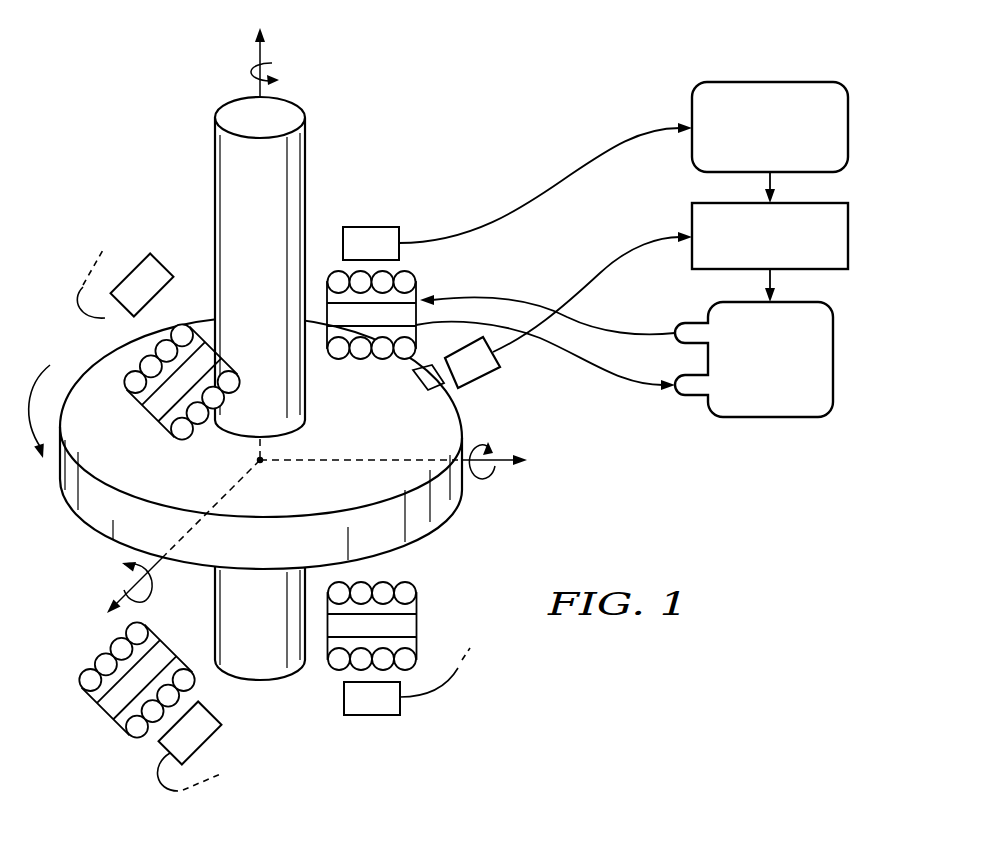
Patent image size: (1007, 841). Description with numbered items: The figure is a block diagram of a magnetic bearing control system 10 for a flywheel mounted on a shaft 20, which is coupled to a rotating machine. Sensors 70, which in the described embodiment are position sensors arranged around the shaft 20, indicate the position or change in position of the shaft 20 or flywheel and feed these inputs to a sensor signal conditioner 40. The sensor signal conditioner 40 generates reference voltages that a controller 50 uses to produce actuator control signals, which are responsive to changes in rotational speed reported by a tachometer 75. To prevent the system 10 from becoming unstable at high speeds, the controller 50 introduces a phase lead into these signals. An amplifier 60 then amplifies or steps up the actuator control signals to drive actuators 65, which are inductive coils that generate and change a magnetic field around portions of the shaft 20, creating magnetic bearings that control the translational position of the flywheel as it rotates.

The magnetic bearing control system 10 is at (124, 96).
The shaft 20 is at (220, 190).
The sensor signal conditioner 40 is at (770, 82).
The controller 50 is at (850, 224).
The amplifier 60 is at (772, 418).
The actuators 65 is at (363, 359).
The sensors 70 is at (153, 256).
The tachometer 75 is at (484, 383).